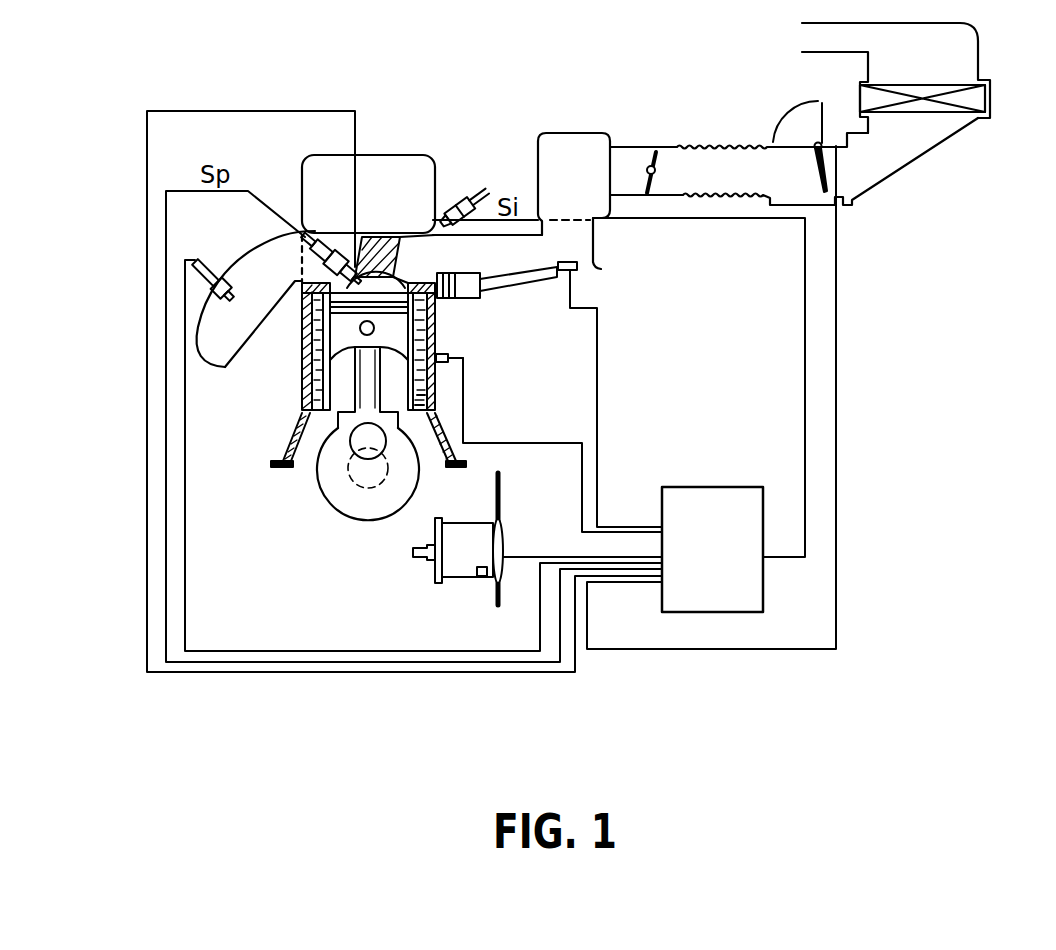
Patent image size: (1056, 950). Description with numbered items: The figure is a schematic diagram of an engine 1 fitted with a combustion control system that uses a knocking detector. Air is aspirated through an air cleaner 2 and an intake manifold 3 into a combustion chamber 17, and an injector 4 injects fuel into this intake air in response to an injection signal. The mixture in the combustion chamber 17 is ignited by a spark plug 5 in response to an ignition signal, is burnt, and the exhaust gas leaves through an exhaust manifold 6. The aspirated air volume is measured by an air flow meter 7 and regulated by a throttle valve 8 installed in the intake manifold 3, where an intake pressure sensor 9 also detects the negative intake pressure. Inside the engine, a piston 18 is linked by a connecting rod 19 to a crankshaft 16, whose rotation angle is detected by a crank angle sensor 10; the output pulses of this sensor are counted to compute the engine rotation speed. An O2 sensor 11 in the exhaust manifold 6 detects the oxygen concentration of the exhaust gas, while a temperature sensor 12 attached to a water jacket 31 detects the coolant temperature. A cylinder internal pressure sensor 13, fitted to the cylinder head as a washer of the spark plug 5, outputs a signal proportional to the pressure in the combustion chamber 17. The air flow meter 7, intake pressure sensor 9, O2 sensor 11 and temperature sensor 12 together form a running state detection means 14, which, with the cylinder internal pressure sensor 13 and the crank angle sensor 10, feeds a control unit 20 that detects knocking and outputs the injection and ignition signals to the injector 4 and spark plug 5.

The engine 1 is at (503, 360).
The air cleaner 2 is at (993, 98).
The intake manifold 3 is at (728, 142).
The injector 4 is at (460, 203).
The spark plug 5 is at (357, 267).
The exhaust manifold 6 is at (250, 329).
The air flow meter 7 is at (827, 143).
The throttle valve 8 is at (650, 150).
The intake pressure sensor 9 is at (578, 270).
The crank angle sensor 10 is at (482, 576).
The O2 sensor 11 is at (215, 272).
The temperature sensor 12 is at (447, 354).
The cylinder internal pressure sensor 13 is at (356, 272).
The running state detection means 14 is at (338, 522).
The crankshaft 16 is at (352, 437).
The combustion chamber 17 is at (306, 333).
The piston 18 is at (320, 349).
The connecting rod 19 is at (383, 385).
The control unit 20 is at (722, 487).
The water jacket 31 is at (438, 378).